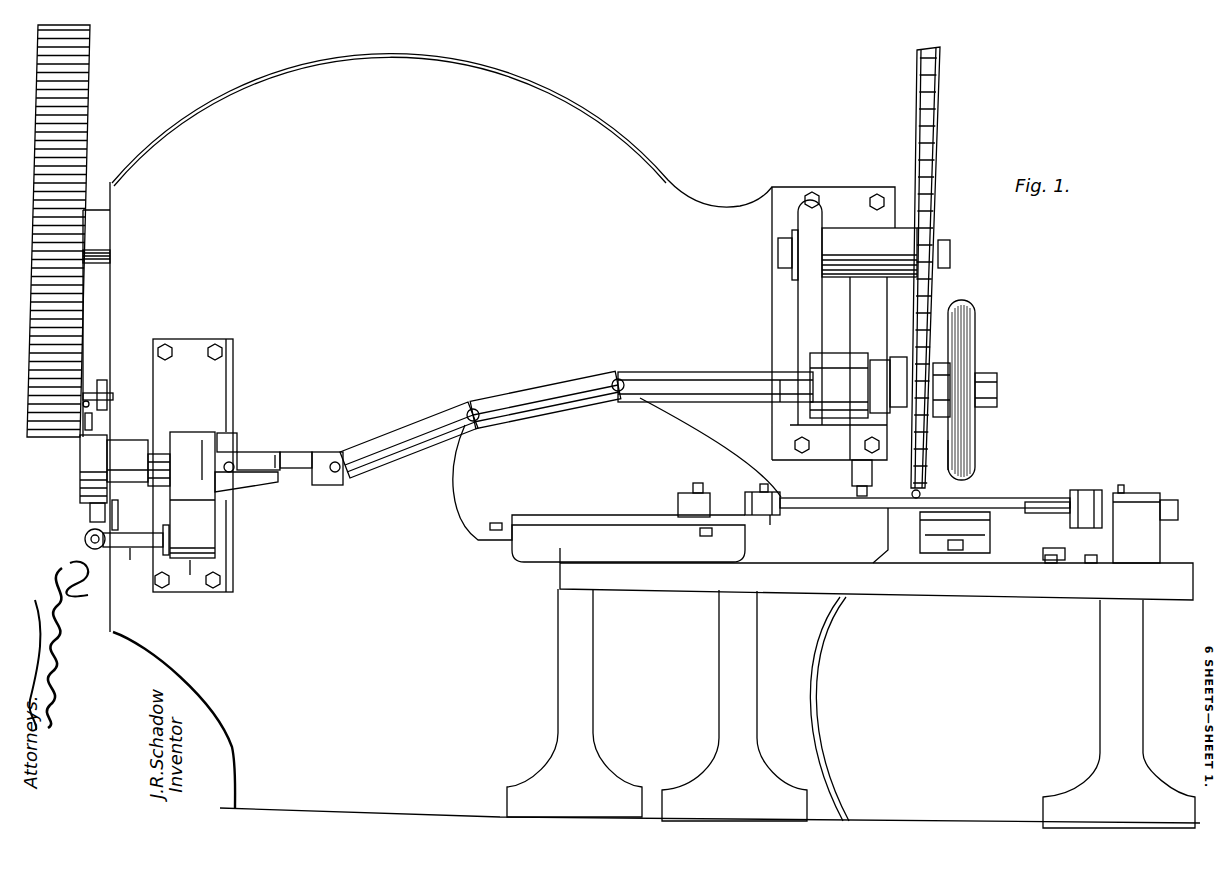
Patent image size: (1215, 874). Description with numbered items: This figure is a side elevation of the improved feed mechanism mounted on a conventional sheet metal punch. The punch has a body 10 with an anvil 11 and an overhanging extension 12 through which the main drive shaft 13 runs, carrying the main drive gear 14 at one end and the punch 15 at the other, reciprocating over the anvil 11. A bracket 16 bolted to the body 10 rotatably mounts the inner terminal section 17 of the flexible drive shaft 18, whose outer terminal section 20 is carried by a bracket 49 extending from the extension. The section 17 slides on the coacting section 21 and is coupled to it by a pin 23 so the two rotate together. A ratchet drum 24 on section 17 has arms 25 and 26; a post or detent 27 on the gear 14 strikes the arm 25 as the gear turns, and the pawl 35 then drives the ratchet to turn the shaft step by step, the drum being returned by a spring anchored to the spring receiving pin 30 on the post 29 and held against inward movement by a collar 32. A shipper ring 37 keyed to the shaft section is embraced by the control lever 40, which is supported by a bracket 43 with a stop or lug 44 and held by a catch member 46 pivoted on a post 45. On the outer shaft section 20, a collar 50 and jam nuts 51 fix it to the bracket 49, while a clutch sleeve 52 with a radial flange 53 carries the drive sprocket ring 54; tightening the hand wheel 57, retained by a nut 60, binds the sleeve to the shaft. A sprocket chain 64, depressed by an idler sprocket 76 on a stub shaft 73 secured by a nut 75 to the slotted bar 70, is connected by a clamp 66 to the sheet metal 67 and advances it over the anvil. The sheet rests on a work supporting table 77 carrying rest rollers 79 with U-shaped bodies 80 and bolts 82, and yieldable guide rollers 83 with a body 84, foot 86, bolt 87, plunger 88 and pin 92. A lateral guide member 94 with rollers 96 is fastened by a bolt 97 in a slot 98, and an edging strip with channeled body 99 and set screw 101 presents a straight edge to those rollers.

The body 10 is at (655, 502).
The anvil 11 is at (862, 508).
The extension 12 is at (668, 182).
The main drive shaft 13 is at (90, 218).
The main drive gear 14 is at (80, 136).
The punch 15 is at (853, 470).
The bracket 16 is at (225, 385).
The inner terminal section 17 is at (265, 455).
The flexible drive shaft 18 is at (432, 420).
The outer terminal section 20 is at (665, 372).
The coacting shaft section 21 is at (300, 455).
The pin 23 is at (283, 452).
The ratchet drum 24 is at (80, 456).
The arm 25 is at (108, 382).
The arm 26 is at (90, 508).
The post or detent 27 is at (97, 392).
The post 29 is at (114, 530).
The spring receiving pin 30 is at (160, 560).
The collar 32 is at (140, 452).
The pawl 35 is at (92, 421).
The shipper ring 37 is at (237, 433).
The control lever 40 is at (215, 468).
The bracket 43 is at (277, 483).
The stop or lug 44 is at (300, 484).
The post 45 is at (196, 560).
The catch member 46 is at (231, 462).
The bracket 49 is at (825, 312).
The collar 50 is at (877, 352).
The jam nuts 51 is at (782, 403).
The clutch sleeve 52 is at (935, 392).
The radial flange 53 is at (933, 348).
The drive sprocket ring 54 is at (950, 382).
The hand wheel 57 is at (976, 448).
The nut 60 is at (1000, 390).
The sprocket chain 64 is at (938, 137).
The clamp 66 is at (921, 495).
The sheet metal 67 is at (1028, 505).
The slotted bar 70 is at (815, 217).
The stub shaft 73 is at (945, 252).
The nut 75 is at (778, 250).
The idler sprocket 76 is at (843, 240).
The work supporting table 77 is at (982, 600).
The rest rollers 79 is at (942, 525).
The U-shaped body 80 is at (958, 550).
The bolt 82 is at (975, 550).
The guide rollers 83 is at (1082, 500).
The body 84 is at (1148, 548).
The flange or foot 86 is at (1090, 565).
The bolt 87 is at (1050, 565).
The plunger 88 is at (1172, 505).
The pin 92 is at (1122, 490).
The lateral guide member 94 is at (690, 493).
The rollers 96 is at (778, 515).
The bolt 97 is at (703, 534).
The slot 98 is at (606, 515).
The channeled body 99 is at (780, 508).
The set screw 101 is at (783, 495).